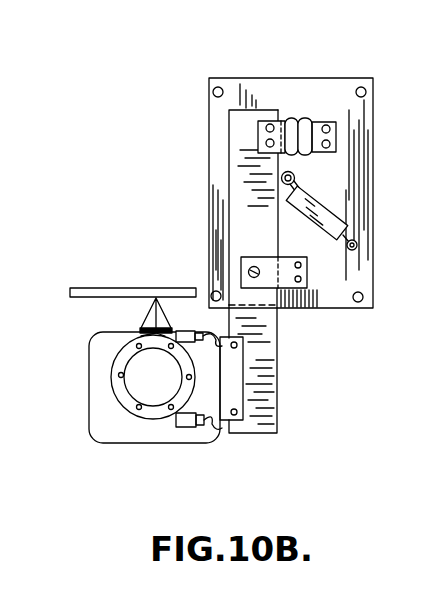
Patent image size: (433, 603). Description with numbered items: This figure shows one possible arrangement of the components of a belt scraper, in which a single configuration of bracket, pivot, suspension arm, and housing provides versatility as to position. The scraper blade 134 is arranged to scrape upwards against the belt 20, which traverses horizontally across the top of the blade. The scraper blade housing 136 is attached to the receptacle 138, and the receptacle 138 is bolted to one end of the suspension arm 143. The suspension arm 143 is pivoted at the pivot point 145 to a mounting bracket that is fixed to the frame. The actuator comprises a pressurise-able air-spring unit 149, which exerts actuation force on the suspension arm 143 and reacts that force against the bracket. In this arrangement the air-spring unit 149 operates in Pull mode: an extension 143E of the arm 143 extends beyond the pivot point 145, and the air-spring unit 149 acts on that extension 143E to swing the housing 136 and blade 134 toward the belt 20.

The belt 20 is at (86, 297).
The scraper blade 134 is at (156, 296).
The scraper blade housing 136 is at (123, 395).
The receptacle 138 is at (205, 405).
The suspension arm 143 is at (272, 380).
The extension of the arm 143E is at (243, 163).
The pivot point 145 is at (252, 268).
The air-spring unit 149 is at (295, 120).